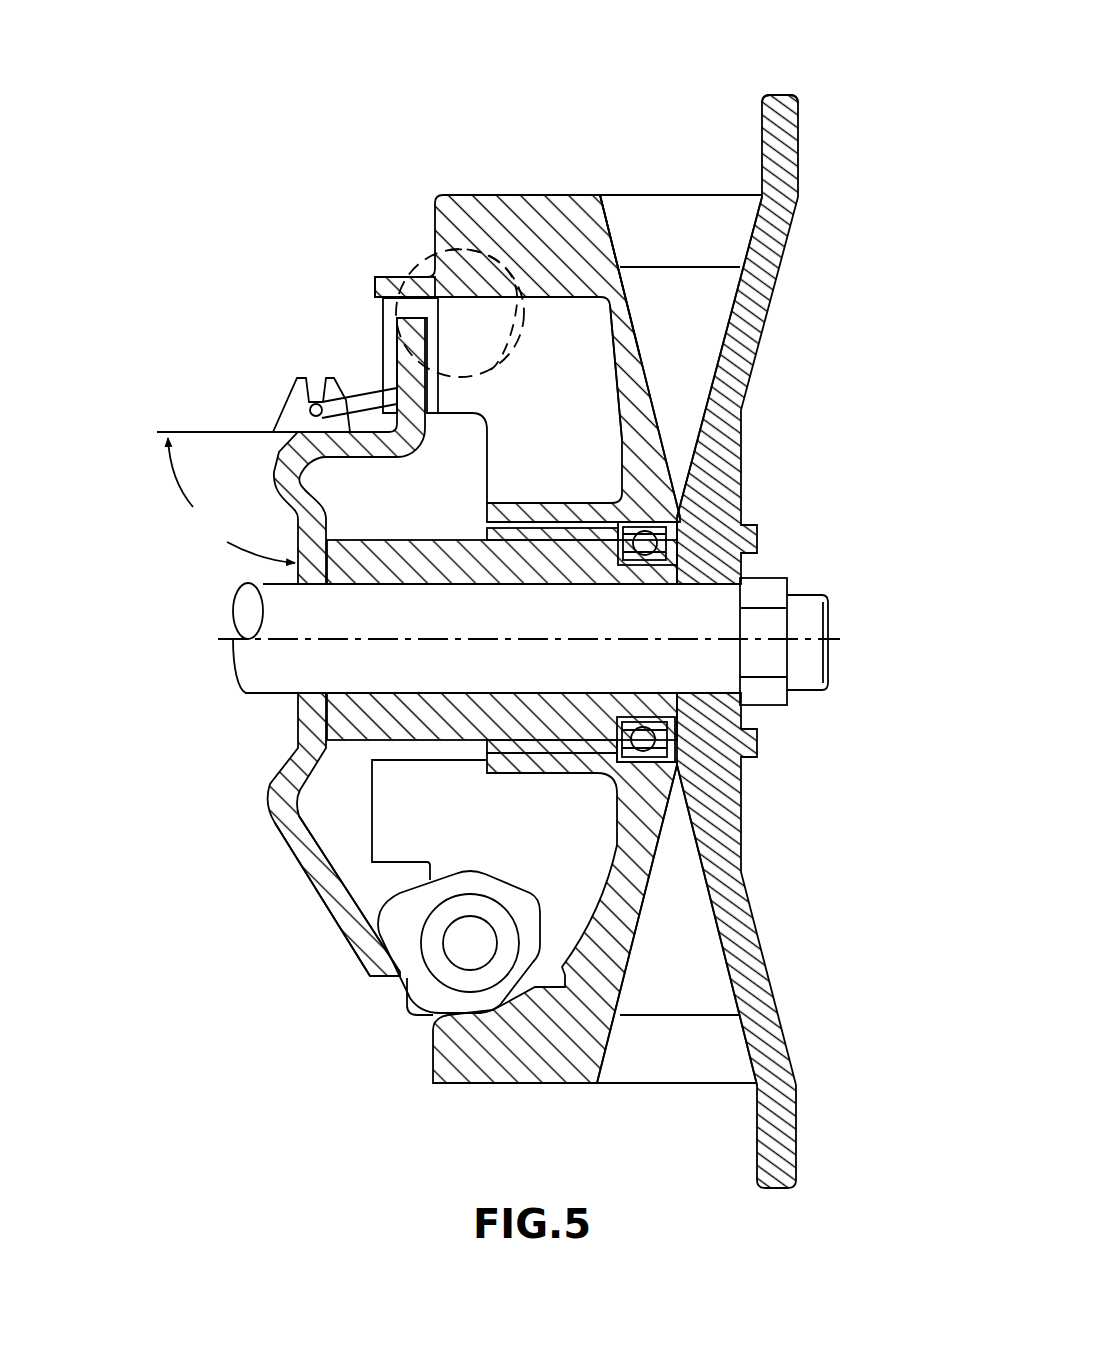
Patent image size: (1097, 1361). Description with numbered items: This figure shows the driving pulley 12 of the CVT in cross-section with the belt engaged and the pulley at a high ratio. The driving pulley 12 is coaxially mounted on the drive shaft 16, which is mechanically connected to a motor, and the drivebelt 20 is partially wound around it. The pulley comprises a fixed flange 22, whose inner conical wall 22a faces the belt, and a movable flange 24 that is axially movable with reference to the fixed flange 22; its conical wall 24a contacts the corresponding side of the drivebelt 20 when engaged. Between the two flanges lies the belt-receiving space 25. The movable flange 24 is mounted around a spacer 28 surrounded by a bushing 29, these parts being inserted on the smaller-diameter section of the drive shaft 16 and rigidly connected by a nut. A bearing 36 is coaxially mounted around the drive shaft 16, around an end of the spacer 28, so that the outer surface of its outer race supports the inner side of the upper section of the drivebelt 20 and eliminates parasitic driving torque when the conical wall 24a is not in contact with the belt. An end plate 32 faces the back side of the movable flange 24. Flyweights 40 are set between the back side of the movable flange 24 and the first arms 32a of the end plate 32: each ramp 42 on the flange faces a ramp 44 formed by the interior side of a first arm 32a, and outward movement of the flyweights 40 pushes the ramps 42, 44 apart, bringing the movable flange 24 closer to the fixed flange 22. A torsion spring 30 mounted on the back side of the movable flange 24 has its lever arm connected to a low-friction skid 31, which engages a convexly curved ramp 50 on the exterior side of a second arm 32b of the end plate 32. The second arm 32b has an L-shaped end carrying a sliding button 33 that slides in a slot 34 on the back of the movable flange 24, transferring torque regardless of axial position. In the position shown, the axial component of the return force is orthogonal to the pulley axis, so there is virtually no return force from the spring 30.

The driving pulley 12 is at (257, 120).
The drive shaft 16 is at (248, 666).
The drivebelt 20 is at (676, 208).
The fixed flange 22 is at (763, 302).
The inner conical wall 22a is at (760, 152).
The movable flange 24 is at (646, 442).
The conical wall 24a is at (646, 378).
The chamber 25 is at (657, 323).
The spacer 28 is at (646, 582).
The bushing 29 is at (577, 742).
The torsion spring 30 is at (520, 297).
The skid 31 is at (283, 403).
The end plate 32 is at (299, 710).
The first arm 32a is at (317, 882).
The second arm 32b is at (330, 442).
The sliding button 33 is at (388, 313).
The slot 34 is at (450, 300).
The bearing 36 is at (648, 543).
The flyweight 40 is at (423, 982).
The ramp 42 is at (557, 965).
The ramp 44 is at (357, 882).
The convexly curved ramp 50 is at (275, 460).